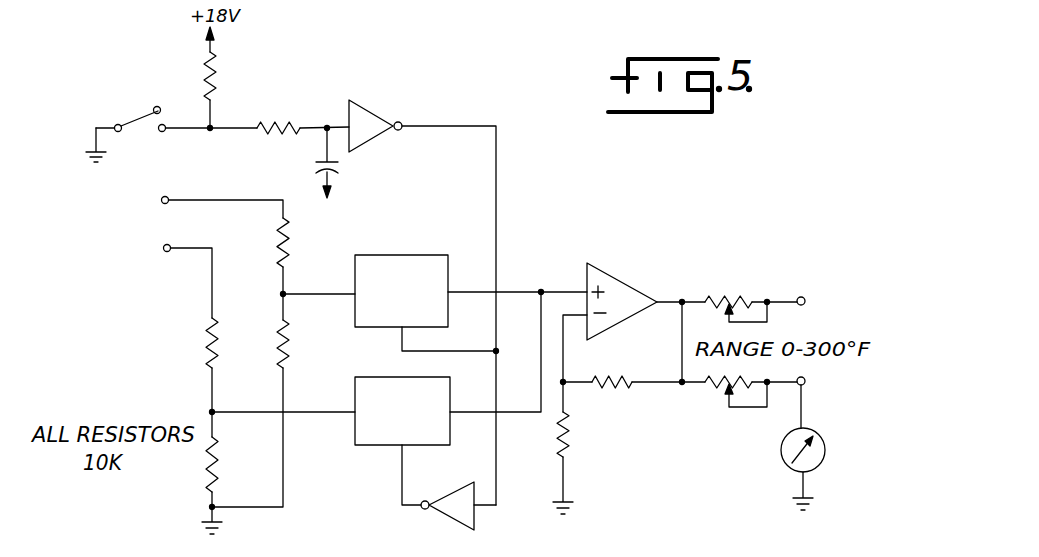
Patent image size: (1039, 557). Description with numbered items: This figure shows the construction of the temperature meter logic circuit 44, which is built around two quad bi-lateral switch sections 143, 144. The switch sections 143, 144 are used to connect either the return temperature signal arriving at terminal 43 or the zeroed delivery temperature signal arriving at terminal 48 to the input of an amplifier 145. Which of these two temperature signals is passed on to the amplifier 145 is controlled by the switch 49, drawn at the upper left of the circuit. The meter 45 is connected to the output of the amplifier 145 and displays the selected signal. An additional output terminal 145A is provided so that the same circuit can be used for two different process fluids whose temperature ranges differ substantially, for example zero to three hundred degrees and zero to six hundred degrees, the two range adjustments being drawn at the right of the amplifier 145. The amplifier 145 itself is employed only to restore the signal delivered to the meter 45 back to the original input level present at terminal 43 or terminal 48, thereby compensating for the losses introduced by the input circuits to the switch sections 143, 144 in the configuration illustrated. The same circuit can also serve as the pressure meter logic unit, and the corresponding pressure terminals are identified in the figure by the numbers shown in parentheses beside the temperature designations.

The switch 49 is at (133, 117).
The terminal 48 is at (161, 200).
The terminal 43 is at (163, 249).
The temperature meter logic circuit 44 is at (526, 194).
The quad bi-lateral switch section 144 is at (381, 257).
The quad bi-lateral switch section 143 is at (367, 376).
The amplifier 145 is at (617, 273).
The additional output terminal 145A is at (803, 297).
The meter 45 is at (808, 428).